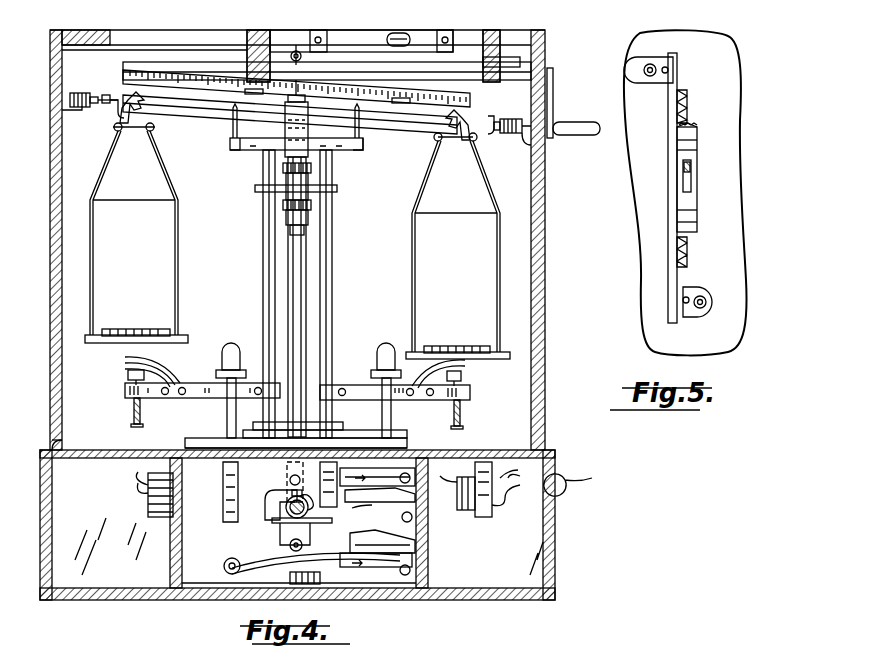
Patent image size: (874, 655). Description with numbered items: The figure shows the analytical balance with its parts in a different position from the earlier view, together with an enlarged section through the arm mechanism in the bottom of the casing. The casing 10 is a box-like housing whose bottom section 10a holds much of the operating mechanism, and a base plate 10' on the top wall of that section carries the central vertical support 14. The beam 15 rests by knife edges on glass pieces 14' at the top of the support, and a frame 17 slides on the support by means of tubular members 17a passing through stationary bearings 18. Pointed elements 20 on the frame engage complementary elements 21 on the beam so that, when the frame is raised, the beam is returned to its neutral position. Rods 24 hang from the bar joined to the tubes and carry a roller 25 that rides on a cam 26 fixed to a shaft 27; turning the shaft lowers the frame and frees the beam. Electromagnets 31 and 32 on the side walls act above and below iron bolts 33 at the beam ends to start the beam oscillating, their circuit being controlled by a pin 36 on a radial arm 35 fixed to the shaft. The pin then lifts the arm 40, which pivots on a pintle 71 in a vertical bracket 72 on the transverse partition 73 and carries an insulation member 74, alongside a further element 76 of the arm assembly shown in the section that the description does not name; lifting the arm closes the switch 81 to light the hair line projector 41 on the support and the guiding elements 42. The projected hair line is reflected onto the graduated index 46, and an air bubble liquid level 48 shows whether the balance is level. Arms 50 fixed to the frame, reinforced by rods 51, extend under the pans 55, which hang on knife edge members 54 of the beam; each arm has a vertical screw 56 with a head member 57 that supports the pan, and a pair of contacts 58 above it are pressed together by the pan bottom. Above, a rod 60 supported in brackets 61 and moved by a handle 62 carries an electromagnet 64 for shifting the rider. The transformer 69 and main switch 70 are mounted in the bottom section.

In FIG. 4, the casing 10 is at (297, 315).
In FIG. 4, the bottom section 10a is at (52, 438).
In FIG. 4, the base plate 10' is at (318, 438).
In FIG. 4, the vertical support 14 is at (330, 297).
In FIG. 4, the glass pieces 14' is at (315, 118).
In FIG. 4, the beam 15 is at (200, 108).
In FIG. 4, the frame 17 is at (333, 280).
In FIG. 4, the tubular members 17a is at (263, 286).
In FIG. 4, the bearings 18 is at (255, 188).
In FIG. 4, the pointed elements 20 is at (240, 128).
In FIG. 4, the complementary elements 21 is at (250, 88).
In FIG. 4, the rods 24 is at (335, 424).
In FIG. 4, the roller 25 is at (287, 482).
In FIG. 4, the cam 26 is at (280, 492).
In FIG. 4, the shaft 27 is at (305, 516).
In FIG. 4, the electromagnet 31 is at (78, 92).
In FIG. 4, the electromagnet 32 is at (508, 134).
In FIG. 4, the iron bolts 33 is at (116, 98).
In FIG. 4, the radial arm 35 is at (278, 523).
In FIG. 4, the pin 36 is at (290, 543).
In FIG. 4, the arm 40 is at (412, 545).
In FIG. 5, the arm 40 is at (691, 176).
In FIG. 4, the hair line projector 41 is at (290, 190).
In FIG. 4, the guiding elements 42 is at (230, 350).
In FIG. 4, the index 46 is at (185, 442).
In FIG. 4, the air bubble liquid level 48 is at (250, 432).
In FIG. 4, the arms 50 is at (125, 390).
In FIG. 4, the rods 51 is at (227, 400).
In FIG. 4, the knife edge members 54 is at (140, 110).
In FIG. 4, the pans 55 is at (134, 330).
In FIG. 4, the vertical screw 56 is at (133, 412).
In FIG. 4, the head members 57 is at (128, 374).
In FIG. 4, the contacts 58 is at (168, 373).
In FIG. 4, the rod 60 is at (183, 68).
In FIG. 4, the brackets 61 is at (268, 40).
In FIG. 4, the handle 62 is at (372, 50).
In FIG. 4, the electromagnet 64 is at (300, 50).
In FIG. 4, the transformer 69 is at (518, 505).
In FIG. 4, the main switch 70 is at (148, 512).
In FIG. 4, the pintle 71 is at (405, 500).
In FIG. 5, the vertical bracket 72 is at (690, 212).
In FIG. 4, the transverse partition 73 is at (428, 574).
In FIG. 5, the transverse partition 73 is at (735, 280).
In FIG. 4, the insulation member 74 is at (355, 540).
In FIG. 5, the insulation member 74 is at (697, 148).
In FIG. 5, the spring 76 is at (690, 225).
In FIG. 4, the switch 81 is at (457, 490).
In FIG. 5, the switch 81 is at (694, 126).